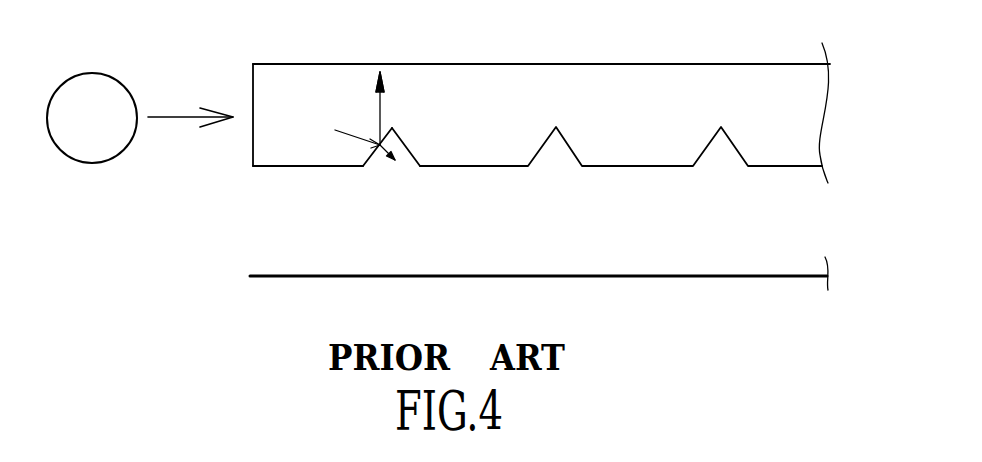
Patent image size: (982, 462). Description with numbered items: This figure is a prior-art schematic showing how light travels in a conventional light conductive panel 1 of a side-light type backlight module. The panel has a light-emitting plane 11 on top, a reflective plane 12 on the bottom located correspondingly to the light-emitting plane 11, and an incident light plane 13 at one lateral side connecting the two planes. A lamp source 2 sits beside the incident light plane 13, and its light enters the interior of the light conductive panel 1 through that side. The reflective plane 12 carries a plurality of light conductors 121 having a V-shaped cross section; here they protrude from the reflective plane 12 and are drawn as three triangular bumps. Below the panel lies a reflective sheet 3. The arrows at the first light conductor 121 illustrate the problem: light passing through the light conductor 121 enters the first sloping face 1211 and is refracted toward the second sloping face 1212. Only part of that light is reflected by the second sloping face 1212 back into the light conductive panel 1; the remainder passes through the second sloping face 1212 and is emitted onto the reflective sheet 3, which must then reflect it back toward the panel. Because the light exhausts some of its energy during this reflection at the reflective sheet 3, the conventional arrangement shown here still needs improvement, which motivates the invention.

The light conductive panel 1 is at (527, 122).
The light-emitting plane 11 is at (688, 64).
The reflective plane 12 is at (782, 166).
The incident light plane 13 is at (253, 128).
The light conductor 121 is at (389, 181).
The first sloping face 1211 is at (375, 156).
The second sloping face 1212 is at (412, 158).
The lamp source 2 is at (112, 102).
The reflective sheet 3 is at (738, 276).